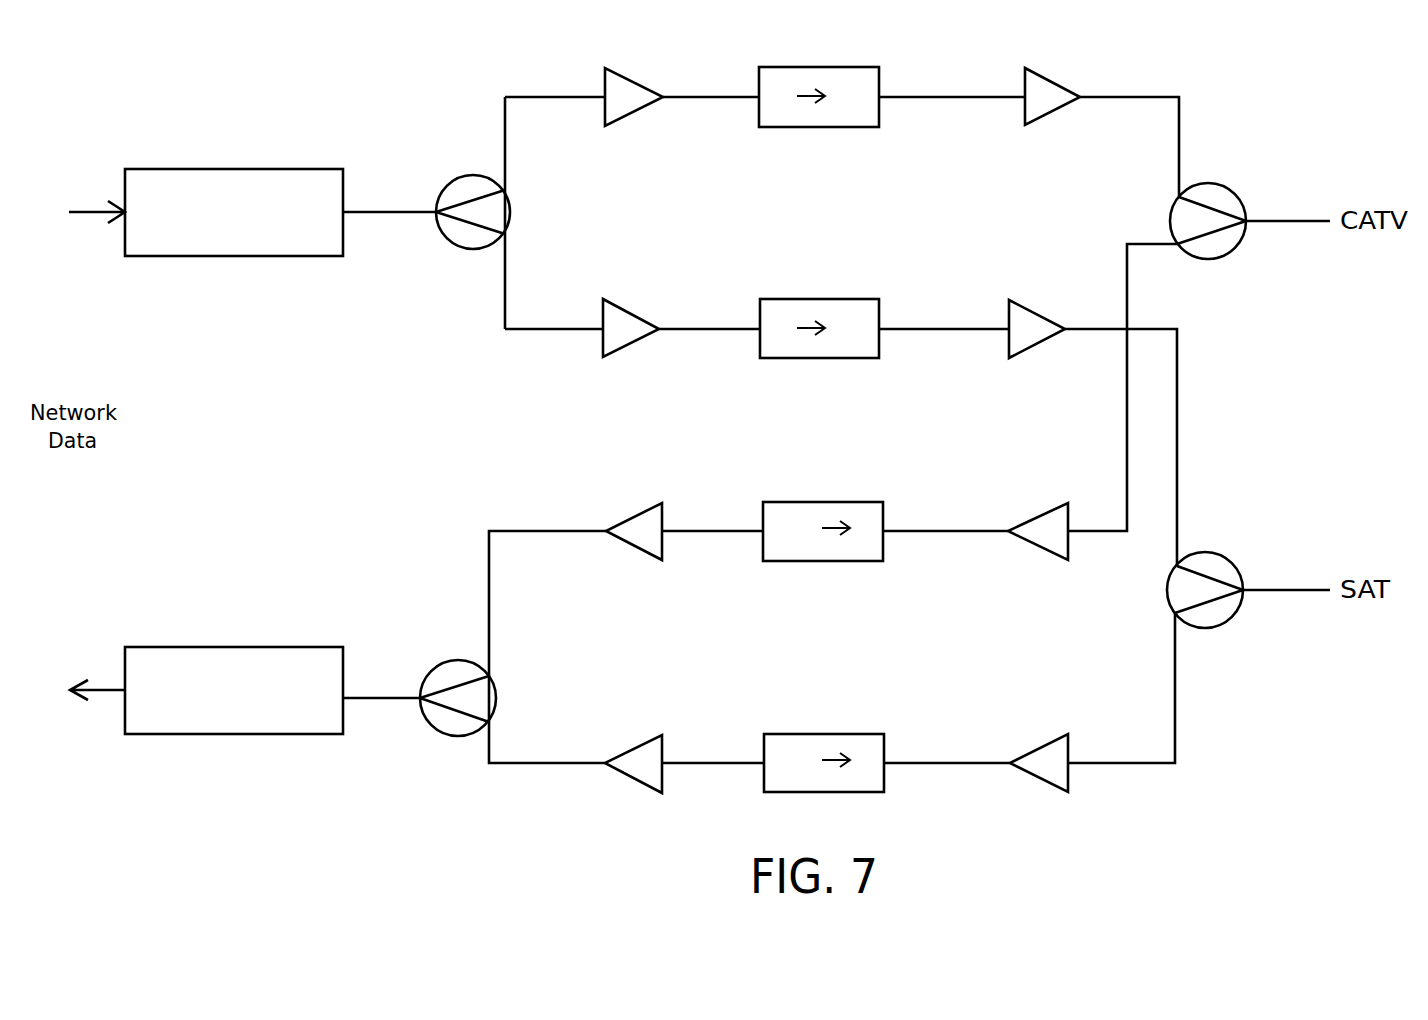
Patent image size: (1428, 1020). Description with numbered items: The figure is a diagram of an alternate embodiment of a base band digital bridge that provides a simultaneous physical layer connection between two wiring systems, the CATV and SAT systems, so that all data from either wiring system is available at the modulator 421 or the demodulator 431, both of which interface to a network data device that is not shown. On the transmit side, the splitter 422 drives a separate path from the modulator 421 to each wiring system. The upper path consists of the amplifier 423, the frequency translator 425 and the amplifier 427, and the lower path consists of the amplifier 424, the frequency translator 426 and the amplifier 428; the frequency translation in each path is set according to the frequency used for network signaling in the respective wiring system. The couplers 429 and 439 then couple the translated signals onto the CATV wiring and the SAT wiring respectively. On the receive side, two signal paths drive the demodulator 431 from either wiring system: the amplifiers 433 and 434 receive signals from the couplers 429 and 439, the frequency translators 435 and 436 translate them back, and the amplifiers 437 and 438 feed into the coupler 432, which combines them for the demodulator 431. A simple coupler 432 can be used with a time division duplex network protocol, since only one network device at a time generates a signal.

The modulator 421 is at (238, 162).
The splitter 422 is at (470, 170).
The amplifier 423 is at (630, 73).
The amplifier 424 is at (643, 313).
The frequency translator 425 is at (831, 65).
The frequency translator 426 is at (815, 297).
The amplifier 427 is at (1056, 75).
The amplifier 428 is at (1042, 308).
The coupler 429 is at (1232, 183).
The demodulator 431 is at (247, 643).
The coupler 432 is at (455, 660).
The amplifier 433 is at (1045, 510).
The amplifier 434 is at (1037, 745).
The frequency translator 435 is at (831, 498).
The frequency translator 436 is at (824, 730).
The amplifier 437 is at (637, 510).
The amplifier 438 is at (636, 742).
The coupler 439 is at (1240, 560).